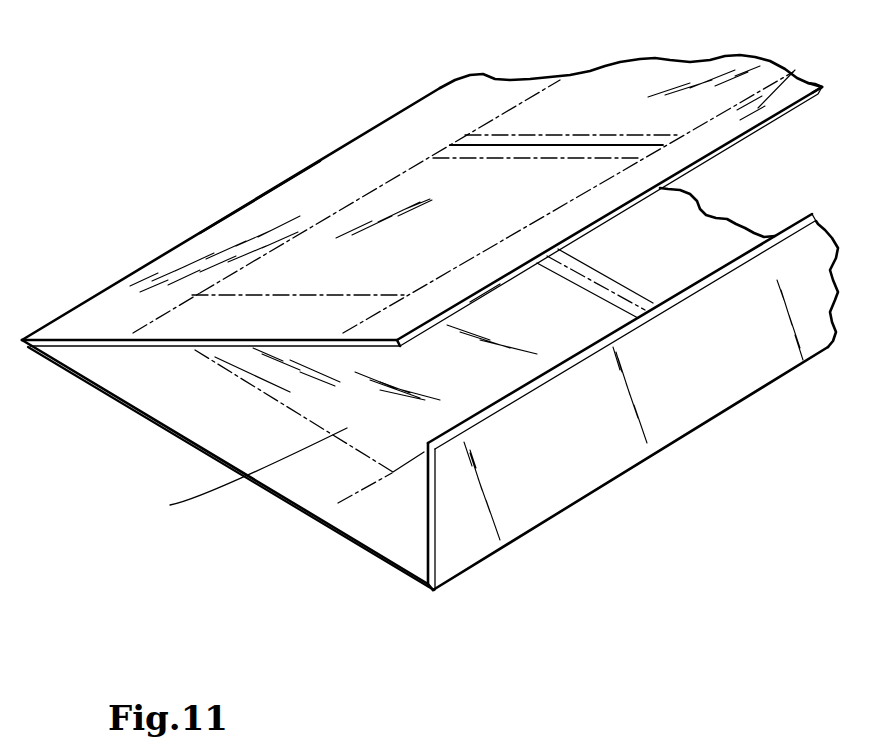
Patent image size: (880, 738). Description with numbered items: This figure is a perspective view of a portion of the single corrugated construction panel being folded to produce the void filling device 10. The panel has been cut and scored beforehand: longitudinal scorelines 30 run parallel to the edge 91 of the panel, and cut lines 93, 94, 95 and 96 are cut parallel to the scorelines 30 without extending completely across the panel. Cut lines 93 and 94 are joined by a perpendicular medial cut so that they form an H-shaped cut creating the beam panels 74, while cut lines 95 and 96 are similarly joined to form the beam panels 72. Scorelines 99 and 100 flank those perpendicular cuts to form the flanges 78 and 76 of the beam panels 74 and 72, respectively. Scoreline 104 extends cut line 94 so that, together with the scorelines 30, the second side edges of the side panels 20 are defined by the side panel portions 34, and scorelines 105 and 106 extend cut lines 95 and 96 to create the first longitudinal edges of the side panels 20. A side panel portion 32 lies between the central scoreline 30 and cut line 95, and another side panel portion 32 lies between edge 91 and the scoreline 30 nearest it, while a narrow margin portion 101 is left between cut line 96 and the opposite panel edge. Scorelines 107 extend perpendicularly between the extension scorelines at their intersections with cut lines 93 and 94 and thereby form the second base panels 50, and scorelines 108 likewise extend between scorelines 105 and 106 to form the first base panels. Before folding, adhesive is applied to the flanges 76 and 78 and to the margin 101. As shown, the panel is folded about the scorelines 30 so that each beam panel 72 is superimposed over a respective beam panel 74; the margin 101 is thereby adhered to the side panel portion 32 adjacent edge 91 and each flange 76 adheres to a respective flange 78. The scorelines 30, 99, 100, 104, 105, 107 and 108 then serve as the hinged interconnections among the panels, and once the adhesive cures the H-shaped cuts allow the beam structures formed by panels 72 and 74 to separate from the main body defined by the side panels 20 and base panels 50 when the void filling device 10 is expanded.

The void filling device 10 is at (663, 737).
The side panel 20 is at (673, 447).
The longitudinal scoreline 30 is at (260, 197).
The side panel portion 32 is at (320, 182).
The side panel portion 34 is at (112, 366).
The second base panel 50 is at (230, 428).
The beam panel 72 is at (598, 98).
The beam panel 74 is at (707, 220).
The flange 76 is at (532, 140).
The flange 78 is at (610, 287).
The edge 91 is at (790, 217).
The cut line 93 is at (400, 458).
The cut line 94 is at (290, 392).
The cut line 95 is at (415, 166).
The cut line 96 is at (557, 211).
The scoreline 99 is at (583, 260).
The scoreline 100 is at (558, 158).
The margin portion 101 is at (806, 80).
The scoreline 104 is at (112, 400).
The scoreline 105 is at (182, 305).
The scoreline 106 is at (443, 293).
The scoreline 107 is at (290, 410).
The scoreline 108 is at (273, 293).